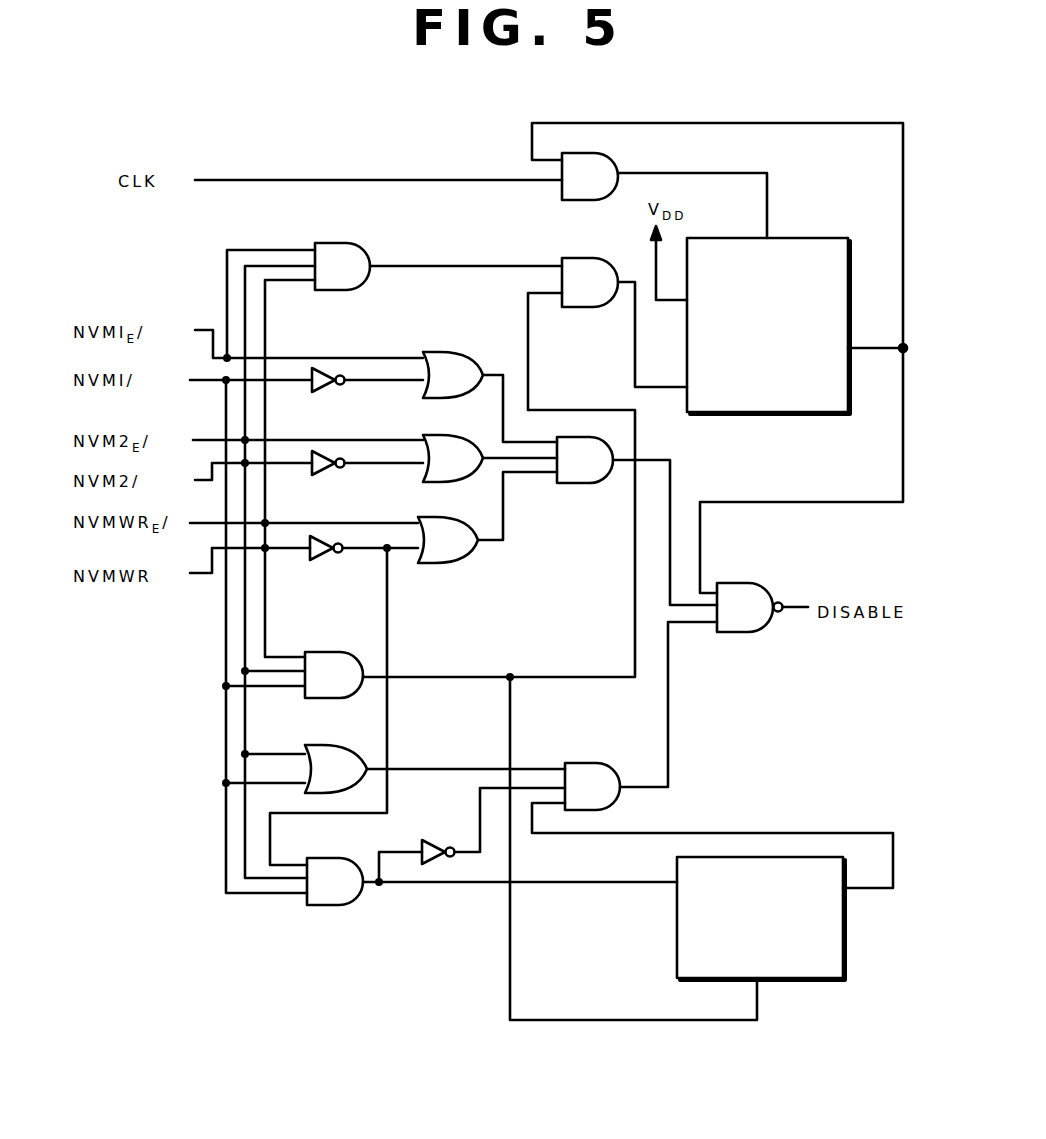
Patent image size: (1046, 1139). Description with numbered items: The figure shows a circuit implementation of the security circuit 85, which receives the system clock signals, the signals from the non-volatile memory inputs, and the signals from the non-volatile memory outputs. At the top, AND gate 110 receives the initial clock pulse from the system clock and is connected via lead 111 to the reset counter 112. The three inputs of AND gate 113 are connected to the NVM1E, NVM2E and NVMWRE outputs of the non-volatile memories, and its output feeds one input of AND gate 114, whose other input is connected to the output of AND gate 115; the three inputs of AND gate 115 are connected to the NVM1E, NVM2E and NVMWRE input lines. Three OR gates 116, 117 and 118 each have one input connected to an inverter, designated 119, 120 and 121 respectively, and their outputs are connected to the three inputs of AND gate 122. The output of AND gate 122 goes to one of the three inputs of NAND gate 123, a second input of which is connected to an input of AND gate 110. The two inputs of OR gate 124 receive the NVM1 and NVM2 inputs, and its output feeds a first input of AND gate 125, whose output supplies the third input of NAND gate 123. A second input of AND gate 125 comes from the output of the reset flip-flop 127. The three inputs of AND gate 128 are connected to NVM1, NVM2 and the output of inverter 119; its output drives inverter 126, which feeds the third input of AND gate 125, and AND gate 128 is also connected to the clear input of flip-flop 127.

The security circuit 85 is at (325, 1014).
The AND gate 110 is at (613, 152).
The lead 111 is at (753, 173).
The reset counter 112 is at (815, 238).
The AND gate 113 is at (343, 243).
The AND gate 114 is at (578, 258).
The AND gate 115 is at (335, 652).
The OR gate 116 is at (446, 352).
The OR gate 117 is at (446, 435).
The OR gate 118 is at (450, 563).
The inverter 119 is at (318, 560).
The inverter 120 is at (330, 475).
The inverter 121 is at (327, 392).
The AND gate 122 is at (592, 483).
The NAND gate 123 is at (762, 632).
The OR gate 124 is at (332, 745).
The AND gate 125 is at (596, 763).
The inverter 126 is at (437, 840).
The reset flip-flop 127 is at (820, 978).
The AND gate 128 is at (350, 905).